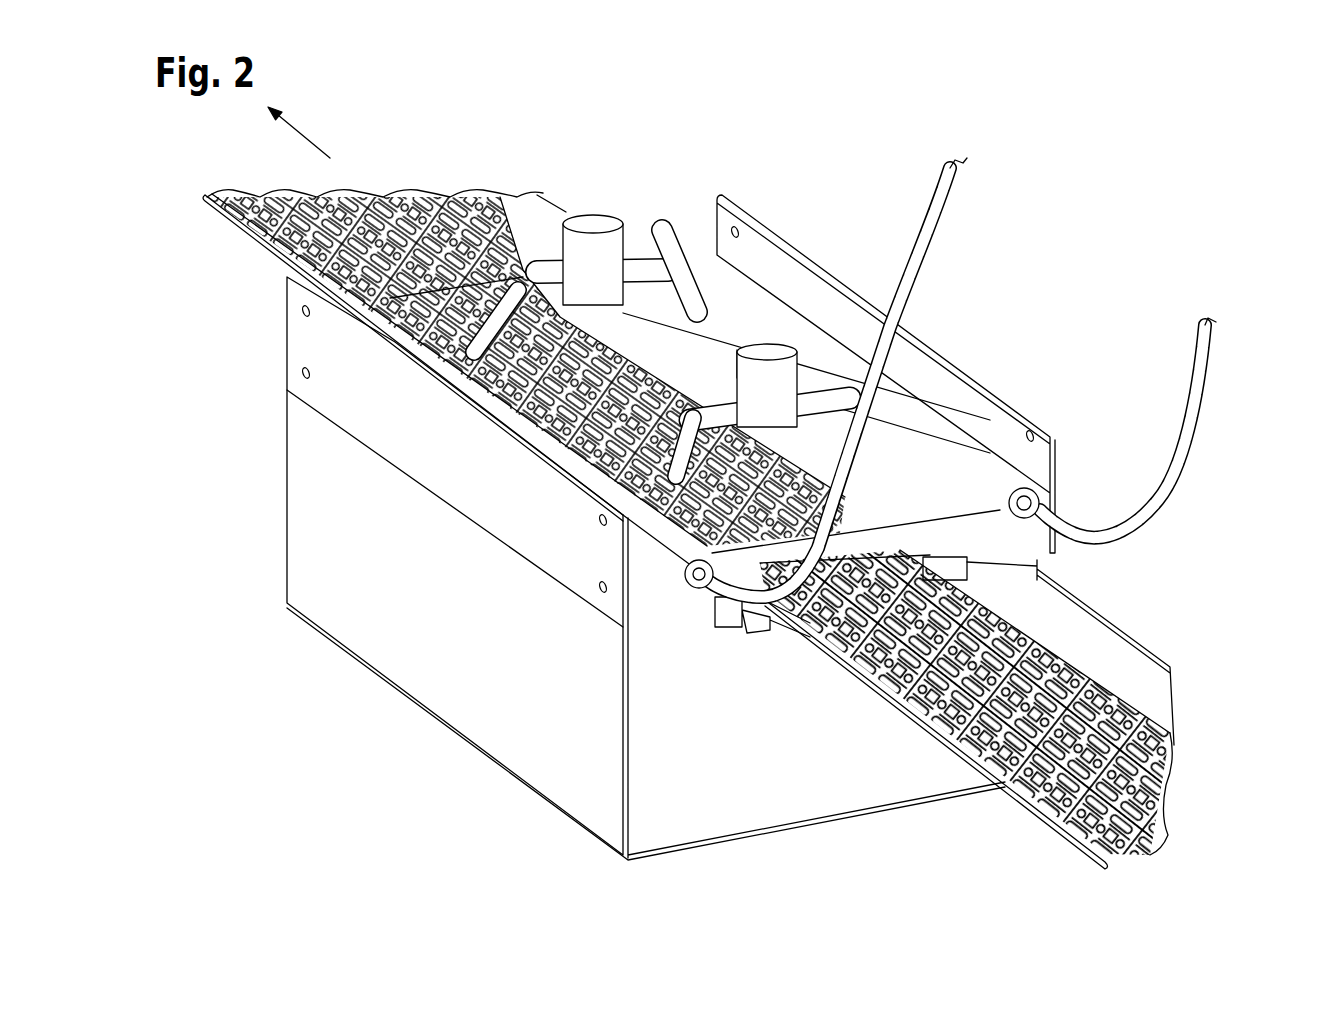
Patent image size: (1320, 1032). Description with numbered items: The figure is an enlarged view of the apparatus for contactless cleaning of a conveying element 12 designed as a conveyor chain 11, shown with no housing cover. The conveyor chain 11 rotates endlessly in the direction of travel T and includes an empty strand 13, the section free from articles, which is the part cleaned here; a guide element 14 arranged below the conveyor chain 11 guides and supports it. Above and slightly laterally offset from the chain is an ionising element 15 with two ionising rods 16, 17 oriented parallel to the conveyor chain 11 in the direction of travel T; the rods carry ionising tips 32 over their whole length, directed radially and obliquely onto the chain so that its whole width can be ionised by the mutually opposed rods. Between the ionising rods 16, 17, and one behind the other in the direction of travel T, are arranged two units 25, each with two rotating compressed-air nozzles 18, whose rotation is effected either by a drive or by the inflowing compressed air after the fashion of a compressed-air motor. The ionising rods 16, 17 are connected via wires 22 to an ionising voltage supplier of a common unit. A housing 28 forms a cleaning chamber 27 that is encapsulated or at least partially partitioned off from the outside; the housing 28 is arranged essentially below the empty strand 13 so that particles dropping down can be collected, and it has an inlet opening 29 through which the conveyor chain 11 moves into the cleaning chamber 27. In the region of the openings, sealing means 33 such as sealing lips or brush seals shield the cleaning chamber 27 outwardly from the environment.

The conveyor chain 11 is at (1113, 700).
The conveying element 12 is at (1167, 740).
The empty strand 13 is at (230, 280).
The guide element 14 is at (1130, 653).
The ionising element 15 is at (945, 412).
The ionising rod 16 is at (673, 553).
The ionising rod 17 is at (998, 470).
The compressed-air nozzle 18 is at (497, 307).
The wires 22 is at (943, 213).
The unit 25 is at (591, 244).
The cleaning chamber 27 is at (890, 507).
The housing 28 is at (330, 607).
The inlet opening 29 is at (767, 623).
The ionising tips 32 is at (1055, 480).
The sealing means 33 is at (967, 567).
The direction of travel T is at (307, 137).